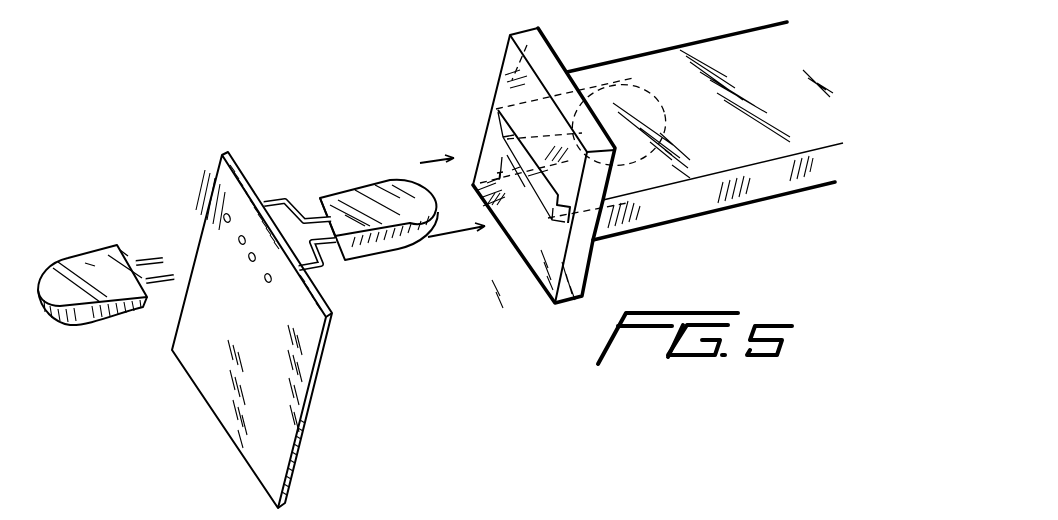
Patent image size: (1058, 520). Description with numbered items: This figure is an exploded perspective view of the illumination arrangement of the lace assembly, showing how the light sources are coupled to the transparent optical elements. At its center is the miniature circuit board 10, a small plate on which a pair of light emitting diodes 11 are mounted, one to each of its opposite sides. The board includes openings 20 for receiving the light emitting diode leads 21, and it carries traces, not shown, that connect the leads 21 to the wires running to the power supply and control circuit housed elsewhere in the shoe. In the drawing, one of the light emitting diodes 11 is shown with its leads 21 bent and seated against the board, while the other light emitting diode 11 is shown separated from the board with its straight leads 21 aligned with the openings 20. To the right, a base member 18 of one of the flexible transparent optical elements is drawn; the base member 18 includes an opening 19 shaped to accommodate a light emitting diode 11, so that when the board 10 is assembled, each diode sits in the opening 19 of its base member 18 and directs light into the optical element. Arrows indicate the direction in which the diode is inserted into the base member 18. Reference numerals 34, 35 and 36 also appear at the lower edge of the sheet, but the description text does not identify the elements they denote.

The miniature circuit board 10 is at (301, 372).
The light emitting diodes 11 is at (68, 305).
The base members 18 is at (497, 111).
The openings 19 is at (542, 193).
The openings 20 is at (268, 283).
The light emitting diode leads 21 is at (158, 262).
The element 34 is at (528, 519).
The element 35 is at (684, 508).
The element 36 is at (827, 513).